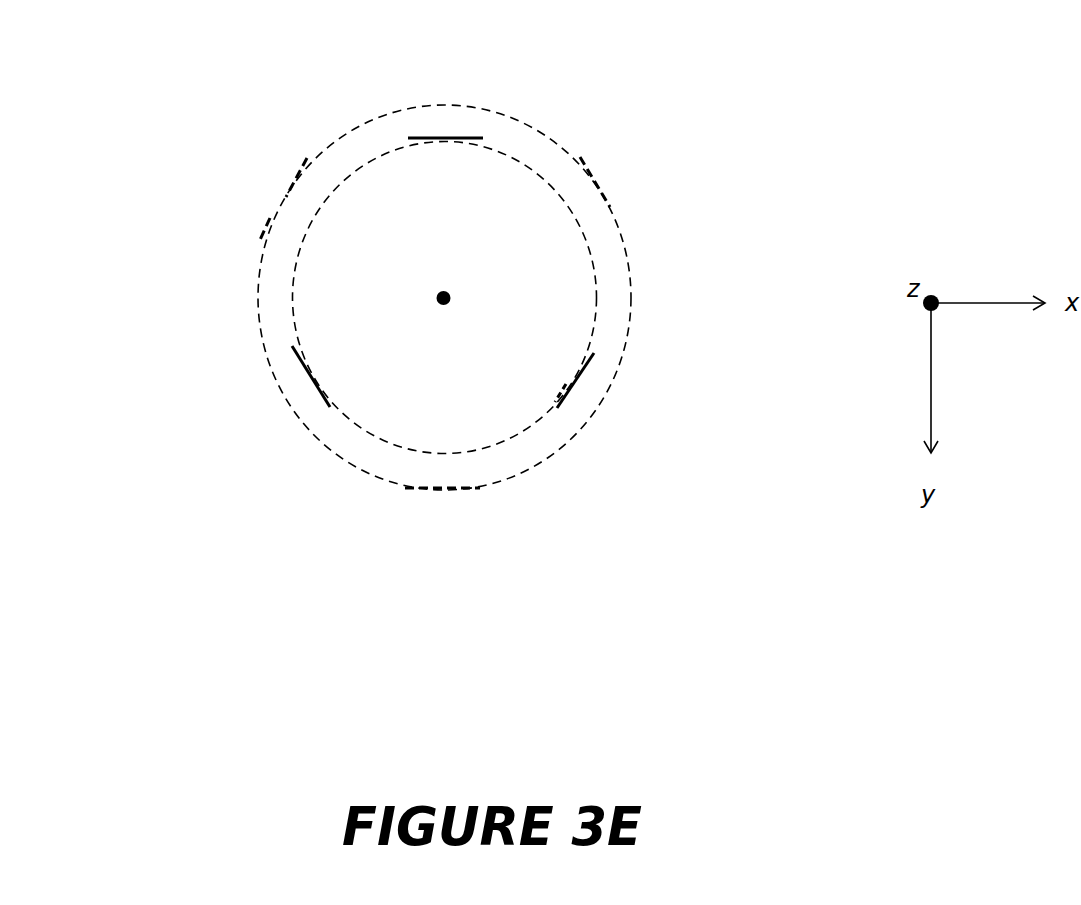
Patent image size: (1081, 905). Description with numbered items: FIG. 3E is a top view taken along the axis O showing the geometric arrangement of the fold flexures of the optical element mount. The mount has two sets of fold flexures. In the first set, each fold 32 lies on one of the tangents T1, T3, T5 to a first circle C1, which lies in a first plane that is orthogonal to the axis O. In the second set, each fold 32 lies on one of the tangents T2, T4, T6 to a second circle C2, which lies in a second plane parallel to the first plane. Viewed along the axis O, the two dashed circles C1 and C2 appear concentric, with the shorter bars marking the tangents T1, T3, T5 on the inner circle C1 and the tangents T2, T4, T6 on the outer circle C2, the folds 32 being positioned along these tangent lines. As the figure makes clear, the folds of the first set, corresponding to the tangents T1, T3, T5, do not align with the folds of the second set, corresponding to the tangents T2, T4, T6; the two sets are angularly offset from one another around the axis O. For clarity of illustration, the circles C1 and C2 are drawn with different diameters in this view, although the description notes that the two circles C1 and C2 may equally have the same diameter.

The tangent T1 is at (310, 372).
The tangent T2 is at (440, 490).
The tangent T3 is at (580, 378).
The tangent T4 is at (598, 185).
The tangent T5 is at (444, 137).
The tangent T6 is at (292, 177).
The fold 32 is at (278, 208).
The first circle C1 is at (393, 443).
The second circle C2 is at (338, 452).
The axis O is at (444, 292).